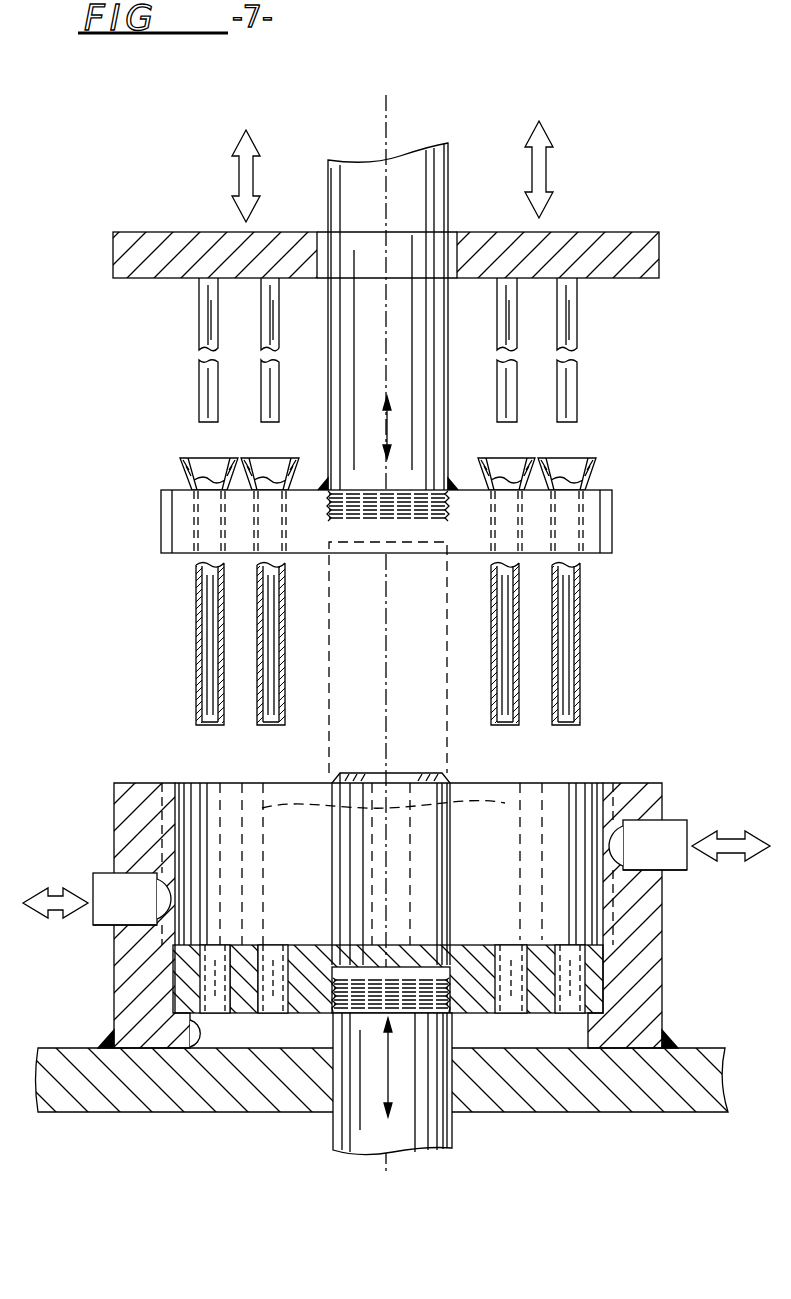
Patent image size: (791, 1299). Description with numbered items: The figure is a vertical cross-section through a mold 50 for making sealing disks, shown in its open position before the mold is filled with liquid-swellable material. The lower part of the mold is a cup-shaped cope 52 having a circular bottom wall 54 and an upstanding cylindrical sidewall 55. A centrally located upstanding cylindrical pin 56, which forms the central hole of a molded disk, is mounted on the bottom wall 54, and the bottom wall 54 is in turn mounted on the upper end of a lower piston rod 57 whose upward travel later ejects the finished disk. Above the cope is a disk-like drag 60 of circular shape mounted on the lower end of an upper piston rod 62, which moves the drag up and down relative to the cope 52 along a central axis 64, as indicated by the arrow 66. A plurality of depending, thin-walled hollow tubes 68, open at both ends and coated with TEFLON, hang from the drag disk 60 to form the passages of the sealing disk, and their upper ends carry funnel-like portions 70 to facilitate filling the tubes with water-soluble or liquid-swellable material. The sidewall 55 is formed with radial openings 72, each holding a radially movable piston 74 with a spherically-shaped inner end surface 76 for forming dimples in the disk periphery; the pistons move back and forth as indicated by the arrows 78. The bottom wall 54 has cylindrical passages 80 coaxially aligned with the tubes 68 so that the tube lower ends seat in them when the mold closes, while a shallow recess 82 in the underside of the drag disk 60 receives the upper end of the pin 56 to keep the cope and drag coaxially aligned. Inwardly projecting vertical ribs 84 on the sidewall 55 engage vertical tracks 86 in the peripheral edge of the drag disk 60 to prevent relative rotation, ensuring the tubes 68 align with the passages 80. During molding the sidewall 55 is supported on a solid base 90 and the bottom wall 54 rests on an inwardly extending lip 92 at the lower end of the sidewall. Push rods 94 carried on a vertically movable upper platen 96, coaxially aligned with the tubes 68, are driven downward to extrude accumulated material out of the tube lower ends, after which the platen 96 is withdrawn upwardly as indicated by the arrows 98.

The mold 50 is at (542, 1097).
The cup-shaped cope 52 is at (563, 1024).
The circular bottom wall 54 is at (238, 967).
The cylindrical sidewall 55 is at (137, 828).
The cylindrical pin 56 is at (347, 882).
The lower piston rod 57 is at (333, 1118).
The drag disk 60 is at (622, 512).
The upper piston rod 62 is at (415, 420).
The central axis 64 is at (402, 1037).
The arrow 66 is at (389, 430).
The hollow tubes 68 is at (257, 633).
The funnel-like portions 70 is at (262, 462).
The radial openings 72 is at (120, 927).
The radially movable piston 74 is at (142, 913).
The spherically-shaped inner end surface 76 is at (167, 887).
The arrows 78 is at (62, 895).
The cylindrical passages 80 is at (500, 968).
The shallow recess 82 is at (372, 542).
The vertical ribs 84 is at (175, 822).
The vertical tracks 86 is at (172, 526).
The solid base 90 is at (145, 1097).
The inwardly extending lip 92 is at (197, 1045).
The push rods 94 is at (199, 322).
The upper platen 96 is at (113, 250).
The arrows 98 is at (253, 165).